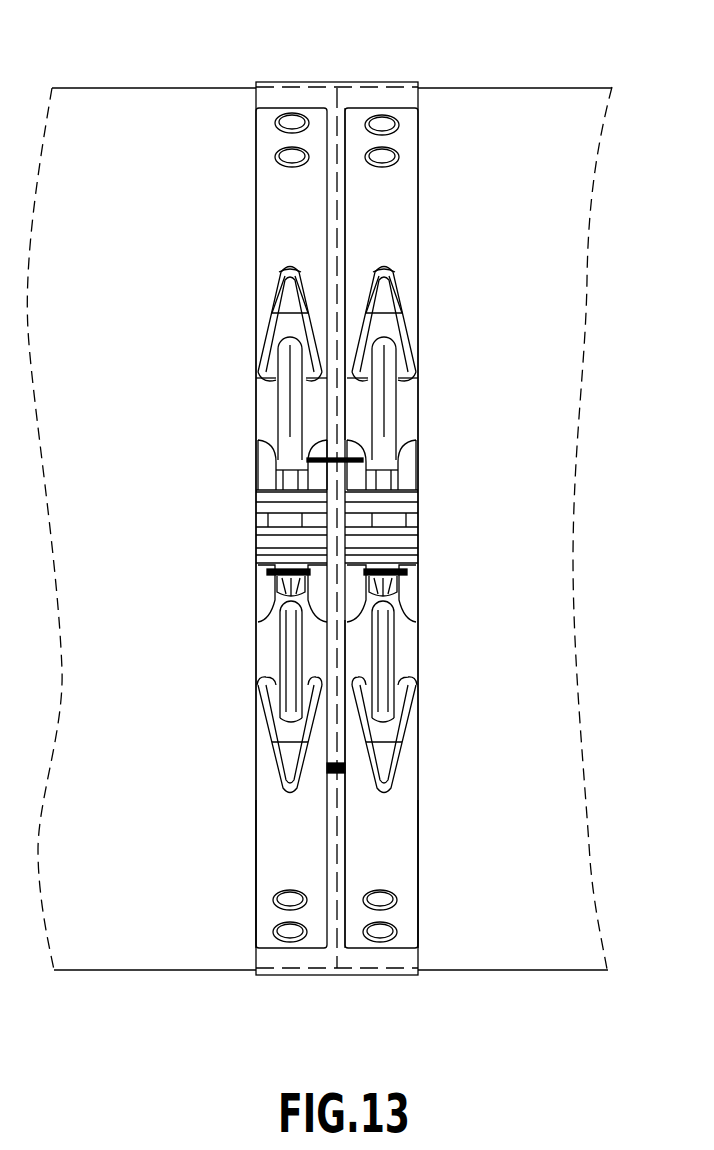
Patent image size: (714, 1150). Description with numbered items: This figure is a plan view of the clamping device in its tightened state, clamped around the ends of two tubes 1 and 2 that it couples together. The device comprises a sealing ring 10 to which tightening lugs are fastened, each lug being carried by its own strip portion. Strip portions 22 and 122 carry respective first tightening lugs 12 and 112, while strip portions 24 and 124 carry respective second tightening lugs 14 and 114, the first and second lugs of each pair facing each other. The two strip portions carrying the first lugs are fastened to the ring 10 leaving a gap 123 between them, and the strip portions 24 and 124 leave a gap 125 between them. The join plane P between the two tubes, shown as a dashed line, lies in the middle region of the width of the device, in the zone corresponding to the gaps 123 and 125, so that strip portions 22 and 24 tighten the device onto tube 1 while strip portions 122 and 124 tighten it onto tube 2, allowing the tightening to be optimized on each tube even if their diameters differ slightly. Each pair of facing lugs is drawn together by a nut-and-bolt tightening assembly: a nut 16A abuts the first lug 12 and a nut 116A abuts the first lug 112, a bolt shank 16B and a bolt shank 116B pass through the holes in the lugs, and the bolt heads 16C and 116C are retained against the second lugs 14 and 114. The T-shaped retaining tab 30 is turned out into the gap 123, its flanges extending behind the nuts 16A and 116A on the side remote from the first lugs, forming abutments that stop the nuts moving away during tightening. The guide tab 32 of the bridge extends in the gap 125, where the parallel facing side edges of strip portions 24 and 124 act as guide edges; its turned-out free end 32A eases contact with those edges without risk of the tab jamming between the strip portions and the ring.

The tube 1 is at (103, 281).
The tube 2 is at (526, 281).
The sealing ring 10 is at (394, 100).
The join plane P is at (328, 108).
The strip portion 22 is at (278, 195).
The strip portion 24 is at (288, 827).
The strip portion 122 is at (393, 224).
The strip portion 124 is at (388, 827).
The gap 123 is at (342, 183).
The gap 125 is at (342, 890).
The bolt shank 16B is at (285, 375).
The bolt shank 116B is at (385, 375).
The nut 16A is at (282, 478).
The nut 116A is at (394, 483).
The retaining tab 30 is at (345, 442).
The first tightening lug 12 is at (276, 513).
The first tightening lug 112 is at (400, 513).
The second tightening lug 14 is at (270, 545).
The second tightening lug 114 is at (405, 545).
The bolt head 16C is at (278, 590).
The bolt head 116C is at (400, 590).
The guide tab 32 is at (330, 735).
The free end 32A is at (341, 772).